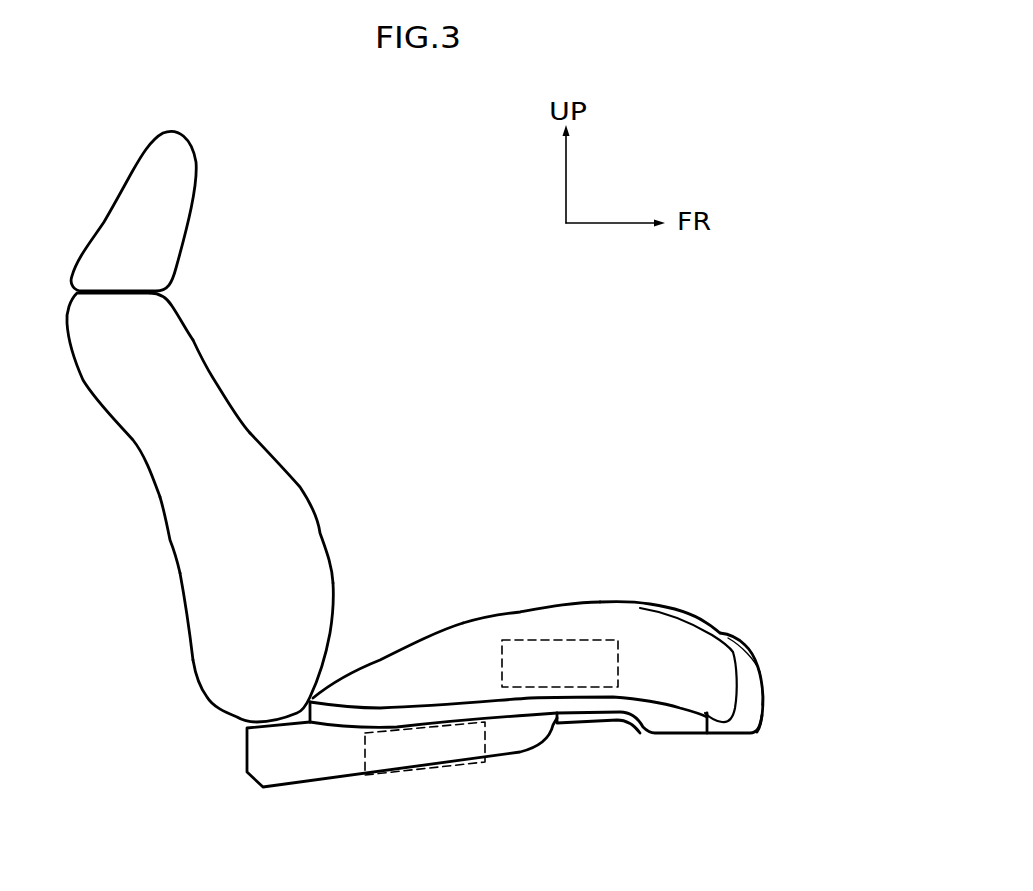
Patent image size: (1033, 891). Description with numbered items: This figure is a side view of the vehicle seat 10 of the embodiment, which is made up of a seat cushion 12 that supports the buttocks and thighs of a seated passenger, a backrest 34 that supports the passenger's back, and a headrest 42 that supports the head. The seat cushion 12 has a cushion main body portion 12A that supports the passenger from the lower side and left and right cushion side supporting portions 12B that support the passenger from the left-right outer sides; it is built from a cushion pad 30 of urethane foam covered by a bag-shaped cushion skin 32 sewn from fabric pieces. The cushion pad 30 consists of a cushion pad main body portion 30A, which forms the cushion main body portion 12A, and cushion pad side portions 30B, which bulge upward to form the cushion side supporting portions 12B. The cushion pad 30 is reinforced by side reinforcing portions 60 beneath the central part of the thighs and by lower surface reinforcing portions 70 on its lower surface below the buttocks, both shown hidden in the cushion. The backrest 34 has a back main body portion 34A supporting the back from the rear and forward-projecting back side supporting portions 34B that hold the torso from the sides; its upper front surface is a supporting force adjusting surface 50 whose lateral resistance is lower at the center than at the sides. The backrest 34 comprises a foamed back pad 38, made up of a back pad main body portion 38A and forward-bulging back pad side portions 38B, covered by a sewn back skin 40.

The vehicle seat 10 is at (510, 405).
The seat cushion 12 is at (670, 737).
The cushion main body portion 12A is at (743, 637).
The cushion side supporting portions 12B is at (510, 610).
The cushion pad 30 is at (652, 645).
The cushion pad main body portion 30A is at (747, 675).
The cushion pad side portions 30B is at (470, 643).
The cushion skin 32 is at (630, 600).
The backrest 34 is at (147, 472).
The back main body portion 34A is at (213, 378).
The back side supporting portions 34B is at (300, 490).
The back pad 38 is at (188, 570).
The back pad main body portion 38A is at (160, 330).
The back pad side portions 38B is at (308, 540).
The back skin 40 is at (175, 523).
The headrest 42 is at (127, 180).
The supporting force adjusting surface 50 is at (193, 340).
The side reinforcing portions 60 is at (555, 637).
The lower surface reinforcing portions 70 is at (365, 752).